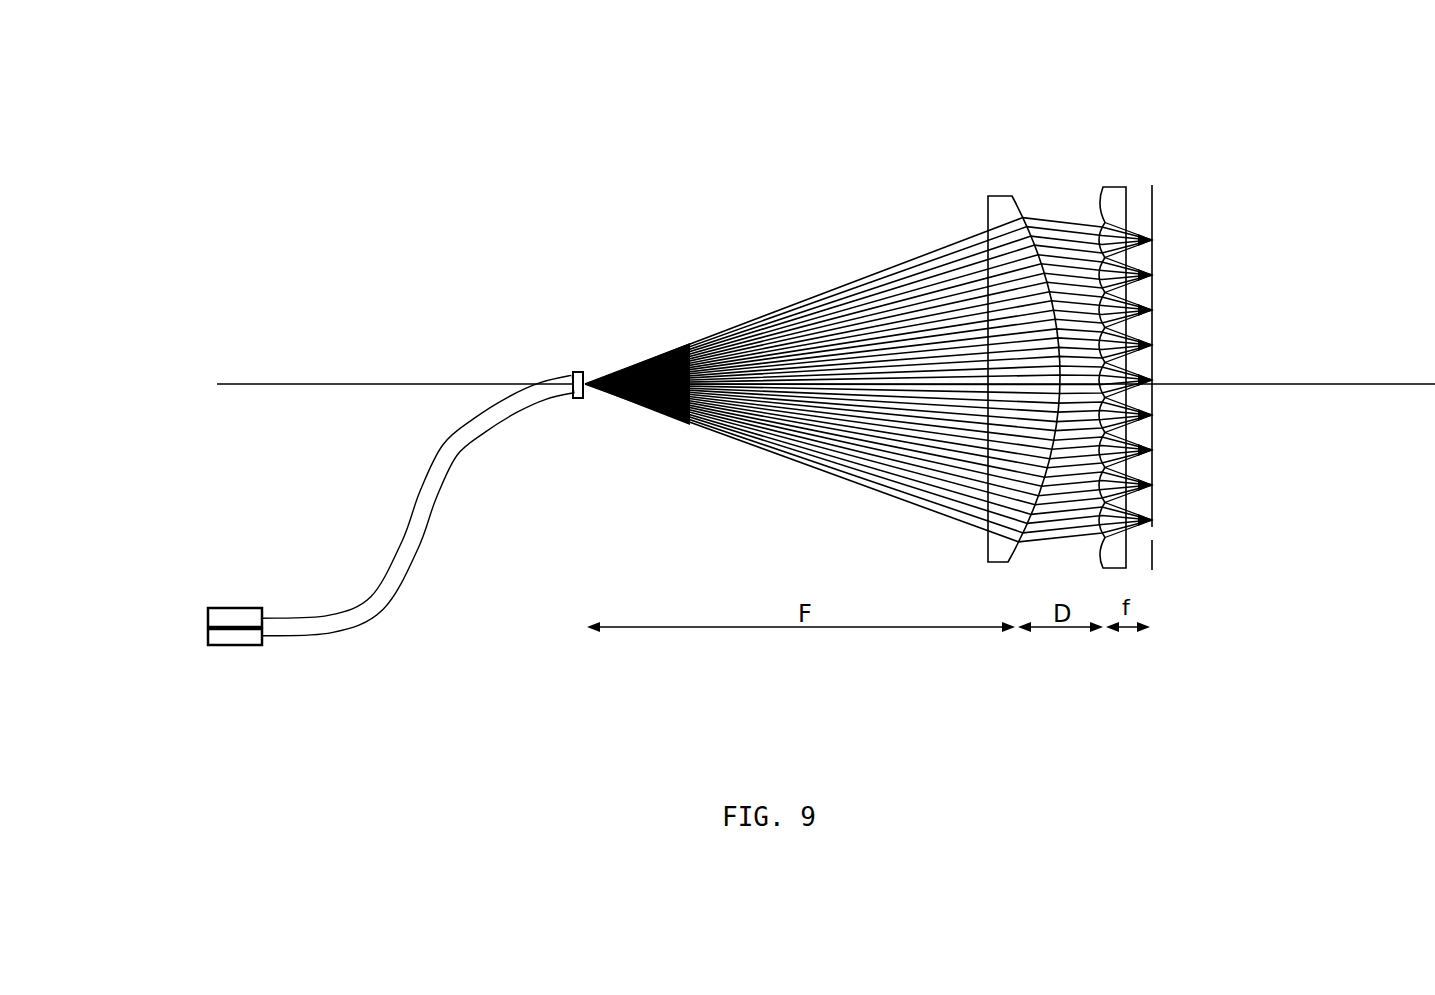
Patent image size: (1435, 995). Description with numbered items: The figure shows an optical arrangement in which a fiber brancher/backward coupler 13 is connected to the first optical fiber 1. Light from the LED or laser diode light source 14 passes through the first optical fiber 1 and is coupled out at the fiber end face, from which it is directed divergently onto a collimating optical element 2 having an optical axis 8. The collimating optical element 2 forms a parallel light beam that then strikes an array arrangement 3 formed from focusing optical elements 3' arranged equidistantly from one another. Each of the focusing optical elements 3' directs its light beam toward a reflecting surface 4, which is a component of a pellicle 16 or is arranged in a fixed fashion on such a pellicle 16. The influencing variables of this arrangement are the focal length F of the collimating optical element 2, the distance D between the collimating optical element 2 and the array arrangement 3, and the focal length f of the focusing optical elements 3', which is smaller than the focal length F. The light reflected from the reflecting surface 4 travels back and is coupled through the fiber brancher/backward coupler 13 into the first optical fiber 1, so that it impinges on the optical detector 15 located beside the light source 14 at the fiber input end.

The first optical fiber 1 is at (407, 522).
The collimating optical element 2 is at (1005, 210).
The array arrangement 3 is at (1038, 322).
The focusing optical element 3' is at (1180, 380).
The reflecting surface 4 is at (1157, 202).
The optical axis 8 is at (237, 384).
The fiber brancher/backward coupler 13 is at (578, 400).
The LED or laser diode light source 14 is at (237, 608).
The optical detector 15 is at (237, 647).
The pellicle 16 is at (1157, 250).